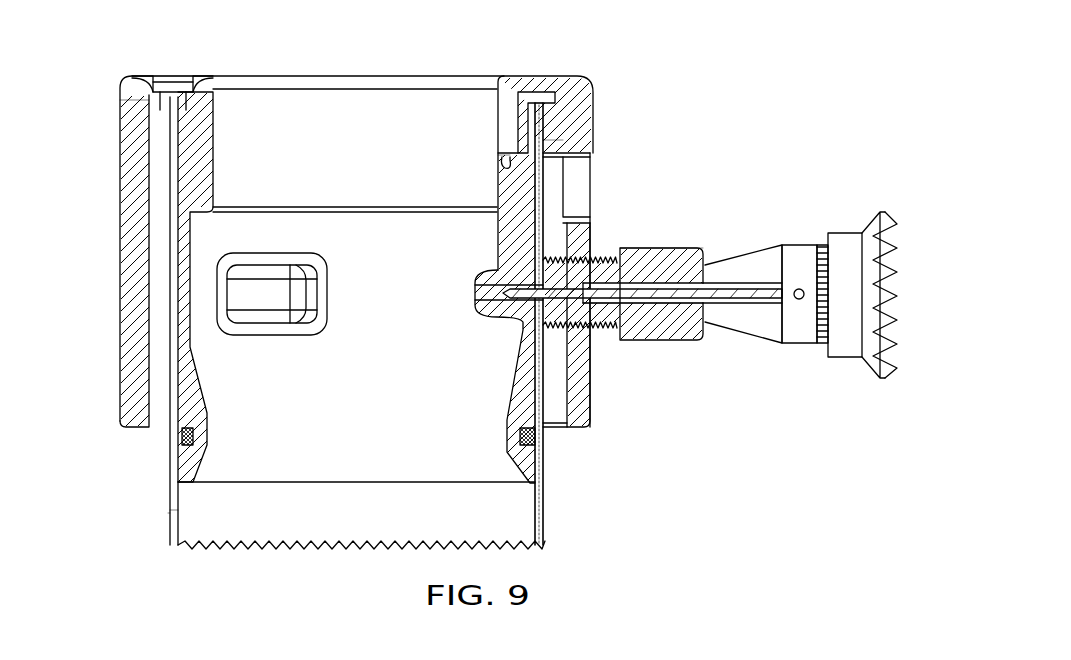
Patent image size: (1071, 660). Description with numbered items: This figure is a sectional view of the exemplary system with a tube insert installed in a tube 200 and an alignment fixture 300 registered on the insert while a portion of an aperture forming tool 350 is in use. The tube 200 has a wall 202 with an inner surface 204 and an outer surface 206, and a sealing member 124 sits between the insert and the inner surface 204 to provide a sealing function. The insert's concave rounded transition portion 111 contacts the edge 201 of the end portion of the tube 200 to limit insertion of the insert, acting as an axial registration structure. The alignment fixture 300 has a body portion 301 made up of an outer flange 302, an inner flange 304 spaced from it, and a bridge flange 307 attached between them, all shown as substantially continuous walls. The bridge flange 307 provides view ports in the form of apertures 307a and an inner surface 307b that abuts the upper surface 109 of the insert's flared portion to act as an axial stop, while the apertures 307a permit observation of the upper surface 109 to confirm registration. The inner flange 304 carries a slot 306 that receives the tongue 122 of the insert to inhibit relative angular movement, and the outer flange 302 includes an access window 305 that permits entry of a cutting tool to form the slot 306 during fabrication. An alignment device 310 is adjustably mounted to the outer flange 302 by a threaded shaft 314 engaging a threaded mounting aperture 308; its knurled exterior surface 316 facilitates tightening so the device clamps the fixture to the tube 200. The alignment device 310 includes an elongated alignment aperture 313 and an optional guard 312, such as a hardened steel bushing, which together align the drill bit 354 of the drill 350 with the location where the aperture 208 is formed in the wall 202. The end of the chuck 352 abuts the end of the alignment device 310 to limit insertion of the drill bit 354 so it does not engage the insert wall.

The alignment fixture 300 is at (600, 86).
The body portion 301 is at (600, 124).
The outer flange 302 is at (120, 250).
The inner flange 304 is at (213, 150).
The access window 305 is at (590, 173).
The slot 306 is at (498, 165).
The bridge flange 307 is at (520, 74).
The apertures 307a is at (186, 74).
The inner surface 307b is at (553, 113).
The mounting aperture 308 is at (605, 277).
The alignment device 310 is at (668, 243).
The guard 312 is at (682, 258).
The elongated alignment aperture 313 is at (700, 293).
The threaded shaft 314 is at (590, 345).
The exterior surface 316 is at (642, 248).
The aperture forming tool 350 is at (843, 378).
The chuck 352 is at (757, 345).
The drill bit 354 is at (668, 325).
The upper surface 109 is at (540, 94).
The transition portion 111 is at (160, 100).
The tongue 122 is at (497, 233).
The sealing member 124 is at (535, 444).
The tube 200 is at (170, 535).
The edge 201 is at (167, 108).
The wall 202 is at (170, 466).
The inner surface 204 is at (178, 513).
The outer surface 206 is at (170, 513).
The aperture 208 is at (527, 294).